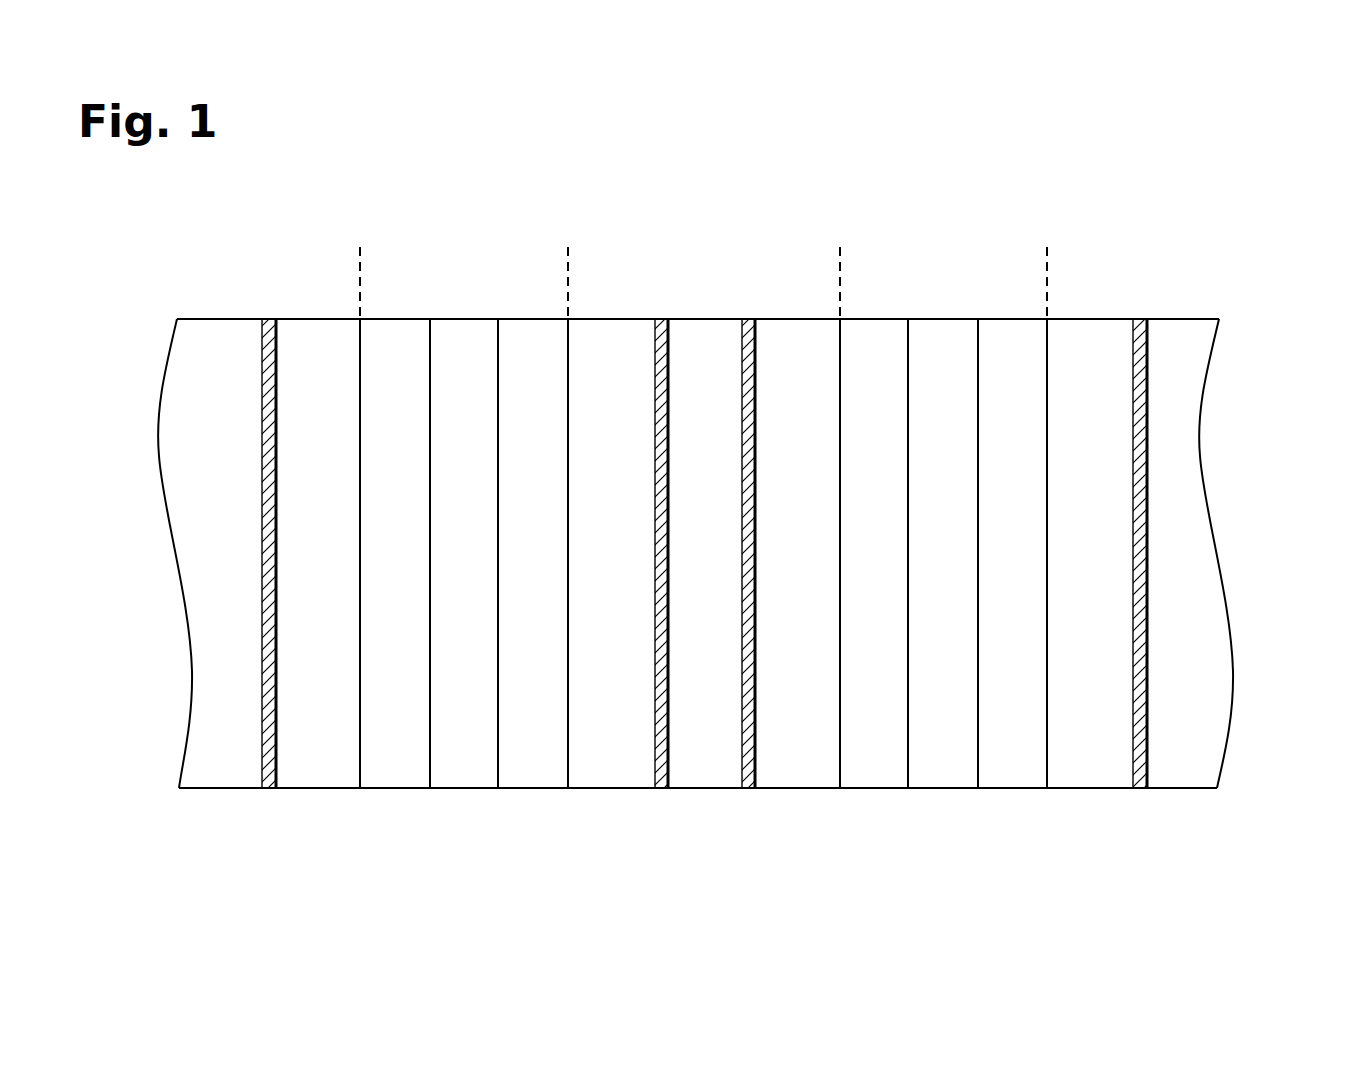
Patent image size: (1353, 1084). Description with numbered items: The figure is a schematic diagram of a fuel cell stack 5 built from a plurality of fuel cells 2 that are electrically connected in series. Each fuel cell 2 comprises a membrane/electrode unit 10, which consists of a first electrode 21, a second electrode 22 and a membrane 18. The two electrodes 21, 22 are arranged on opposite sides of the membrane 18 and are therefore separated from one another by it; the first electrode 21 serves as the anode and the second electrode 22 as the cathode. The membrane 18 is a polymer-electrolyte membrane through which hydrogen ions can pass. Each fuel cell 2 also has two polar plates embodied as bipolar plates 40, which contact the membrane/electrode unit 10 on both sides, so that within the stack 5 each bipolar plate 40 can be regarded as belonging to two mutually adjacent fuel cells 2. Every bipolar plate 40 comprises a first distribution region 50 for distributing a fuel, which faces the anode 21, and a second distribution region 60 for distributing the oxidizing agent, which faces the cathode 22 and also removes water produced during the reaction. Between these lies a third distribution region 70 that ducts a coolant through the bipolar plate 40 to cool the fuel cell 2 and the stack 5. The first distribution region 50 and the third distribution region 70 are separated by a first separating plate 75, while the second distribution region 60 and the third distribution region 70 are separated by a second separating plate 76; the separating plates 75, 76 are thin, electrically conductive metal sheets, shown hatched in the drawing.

The fuel cell stack 5 is at (1268, 224).
The fuel cell 2 is at (471, 797).
The membrane/electrode unit 10 is at (360, 253).
The bipolar plate 40 is at (360, 253).
The membrane 18 is at (470, 335).
The first electrode 21 is at (399, 335).
The second electrode 22 is at (540, 335).
The first distribution region 50 is at (320, 335).
The second distribution region 60 is at (622, 335).
The third distribution region 70 is at (220, 335).
The first separating plate 75 is at (269, 776).
The second separating plate 76 is at (661, 776).